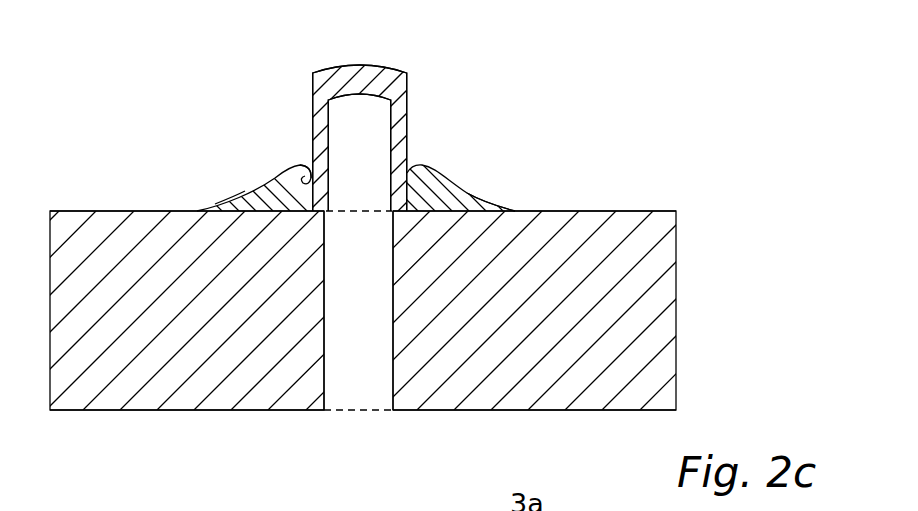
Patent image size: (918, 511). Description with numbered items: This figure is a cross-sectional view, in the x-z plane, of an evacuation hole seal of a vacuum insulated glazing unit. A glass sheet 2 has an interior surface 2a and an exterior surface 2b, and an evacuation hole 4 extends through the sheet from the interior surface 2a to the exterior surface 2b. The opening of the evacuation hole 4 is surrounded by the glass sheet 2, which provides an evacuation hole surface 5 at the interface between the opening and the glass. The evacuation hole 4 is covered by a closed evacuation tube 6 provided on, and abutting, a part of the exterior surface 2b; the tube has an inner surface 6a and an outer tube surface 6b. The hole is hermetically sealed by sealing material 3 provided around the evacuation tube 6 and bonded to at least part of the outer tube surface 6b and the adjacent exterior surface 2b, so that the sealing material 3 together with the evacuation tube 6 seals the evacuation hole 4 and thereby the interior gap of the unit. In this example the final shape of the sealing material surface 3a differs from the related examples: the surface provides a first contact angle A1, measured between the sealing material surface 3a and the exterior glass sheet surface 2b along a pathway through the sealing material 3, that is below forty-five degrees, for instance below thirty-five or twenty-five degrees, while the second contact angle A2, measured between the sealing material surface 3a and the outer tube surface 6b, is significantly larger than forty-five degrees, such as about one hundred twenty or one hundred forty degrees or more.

The glass sheet 2 is at (653, 226).
The interior surface of the glass sheet 2a is at (270, 411).
The exterior surface of the glass sheet 2b is at (587, 211).
The sealing material 3 is at (447, 188).
The sealing material surface 3a is at (482, 208).
The evacuation hole 4 is at (366, 337).
The evacuation hole surface 5 is at (393, 376).
The evacuation tube 6 is at (403, 125).
The inner surface of the evacuation member 6a is at (330, 121).
The outer tube surface 6b is at (312, 122).
The first contact angle A1 is at (230, 196).
The second contact angle A2 is at (306, 167).